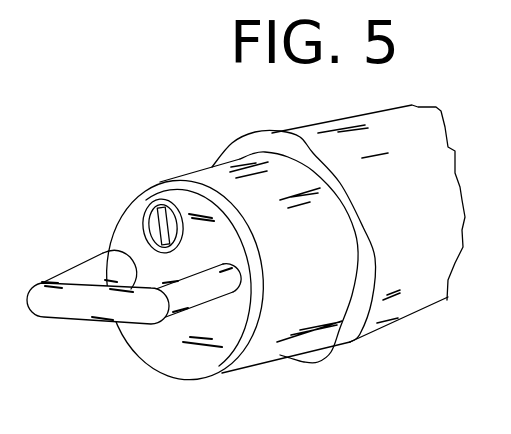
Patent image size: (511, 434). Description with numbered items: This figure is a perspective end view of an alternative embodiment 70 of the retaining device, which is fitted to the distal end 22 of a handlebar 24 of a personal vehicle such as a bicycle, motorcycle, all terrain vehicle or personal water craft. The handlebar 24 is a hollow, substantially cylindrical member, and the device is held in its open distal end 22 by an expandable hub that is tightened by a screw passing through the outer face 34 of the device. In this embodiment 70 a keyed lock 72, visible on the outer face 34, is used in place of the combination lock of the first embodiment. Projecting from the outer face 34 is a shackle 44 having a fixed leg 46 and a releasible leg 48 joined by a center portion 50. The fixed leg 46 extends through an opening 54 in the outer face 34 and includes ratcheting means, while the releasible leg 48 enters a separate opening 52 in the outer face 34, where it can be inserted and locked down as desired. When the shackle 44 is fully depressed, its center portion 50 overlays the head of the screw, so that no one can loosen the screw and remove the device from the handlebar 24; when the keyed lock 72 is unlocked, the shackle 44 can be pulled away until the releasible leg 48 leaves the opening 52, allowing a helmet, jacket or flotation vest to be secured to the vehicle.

The alternative embodiment 70 is at (175, 139).
The keyed lock 72 is at (151, 203).
The handlebar 24 is at (388, 125).
The distal end 22 is at (331, 358).
The outer face 34 is at (195, 352).
The shackle 44 is at (63, 300).
The fixed leg 46 is at (104, 252).
The releasible leg 48 is at (231, 290).
The center portion 50 is at (117, 317).
The opening 52 is at (126, 260).
The opening 54 is at (237, 265).